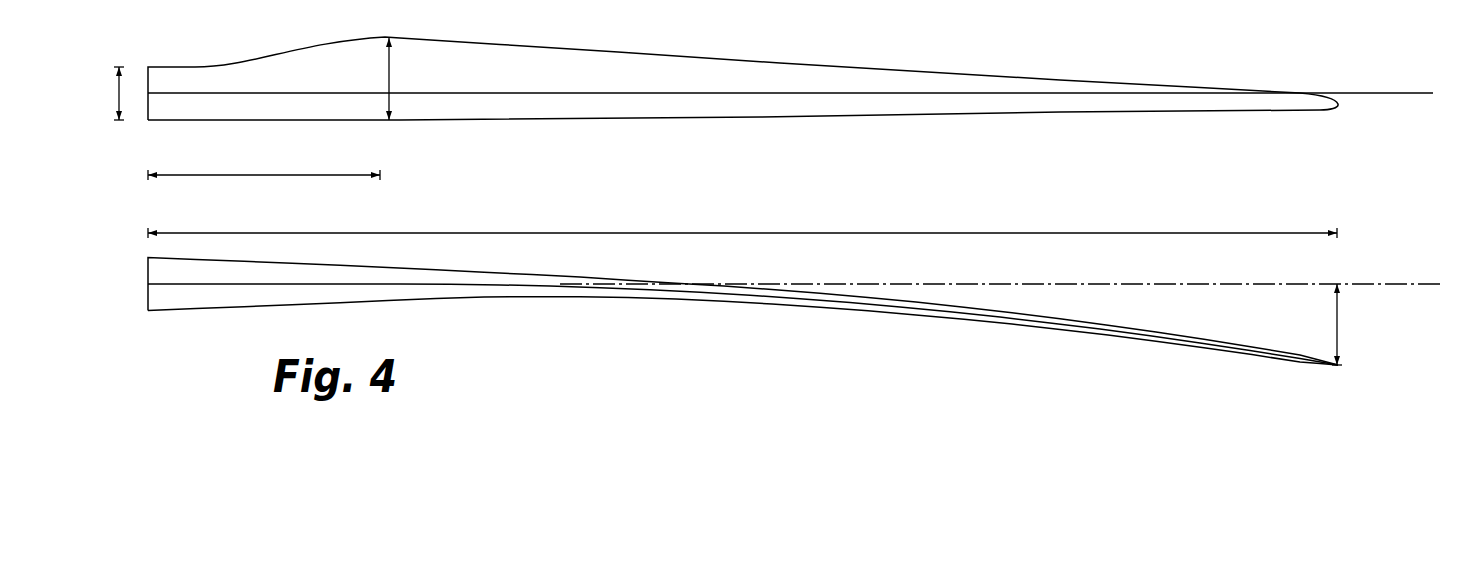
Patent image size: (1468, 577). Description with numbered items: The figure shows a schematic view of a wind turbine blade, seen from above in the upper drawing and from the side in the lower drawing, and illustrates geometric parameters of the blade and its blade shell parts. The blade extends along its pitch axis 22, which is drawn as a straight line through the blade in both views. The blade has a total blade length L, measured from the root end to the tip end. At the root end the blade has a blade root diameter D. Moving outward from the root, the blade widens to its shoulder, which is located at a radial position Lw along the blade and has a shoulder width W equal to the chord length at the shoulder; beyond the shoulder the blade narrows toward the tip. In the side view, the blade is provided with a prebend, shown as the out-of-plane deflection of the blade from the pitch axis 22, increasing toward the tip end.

The pitch axis 22 is at (390, 38).
The blade root diameter D is at (110, 93).
The shoulder width W is at (404, 79).
The shoulder position Lw is at (264, 163).
The blade length L is at (742, 221).